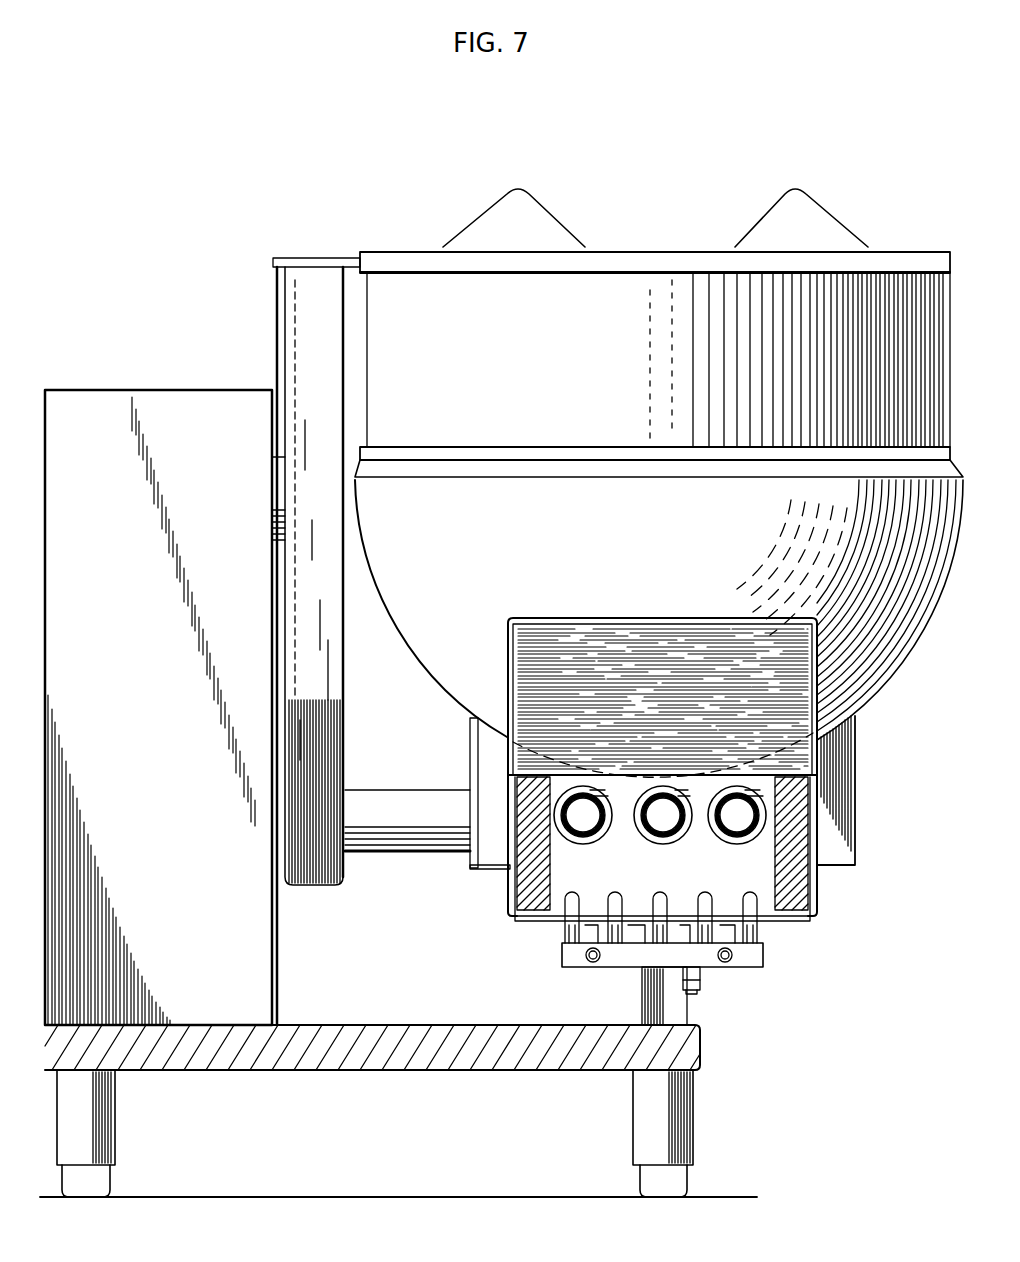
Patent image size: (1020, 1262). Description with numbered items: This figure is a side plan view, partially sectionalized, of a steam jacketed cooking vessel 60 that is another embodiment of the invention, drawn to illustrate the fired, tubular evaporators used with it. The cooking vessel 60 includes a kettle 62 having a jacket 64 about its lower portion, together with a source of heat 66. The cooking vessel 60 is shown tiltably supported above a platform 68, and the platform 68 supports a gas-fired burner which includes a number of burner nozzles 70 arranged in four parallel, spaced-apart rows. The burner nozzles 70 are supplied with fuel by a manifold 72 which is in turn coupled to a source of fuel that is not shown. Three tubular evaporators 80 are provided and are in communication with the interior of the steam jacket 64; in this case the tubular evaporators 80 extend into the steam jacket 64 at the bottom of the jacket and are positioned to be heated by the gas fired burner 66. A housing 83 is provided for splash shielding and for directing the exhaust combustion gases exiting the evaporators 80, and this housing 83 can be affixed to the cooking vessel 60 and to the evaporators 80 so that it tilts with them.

The cooking vessel 60 is at (892, 200).
The kettle 62 is at (906, 271).
The jacket 64 is at (922, 628).
The source of heat 66 is at (555, 937).
The platform 68 is at (477, 1072).
The burner nozzles 70 is at (770, 913).
The manifold 72 is at (748, 960).
The tubular evaporators 80 is at (598, 833).
The housing 83 is at (660, 617).